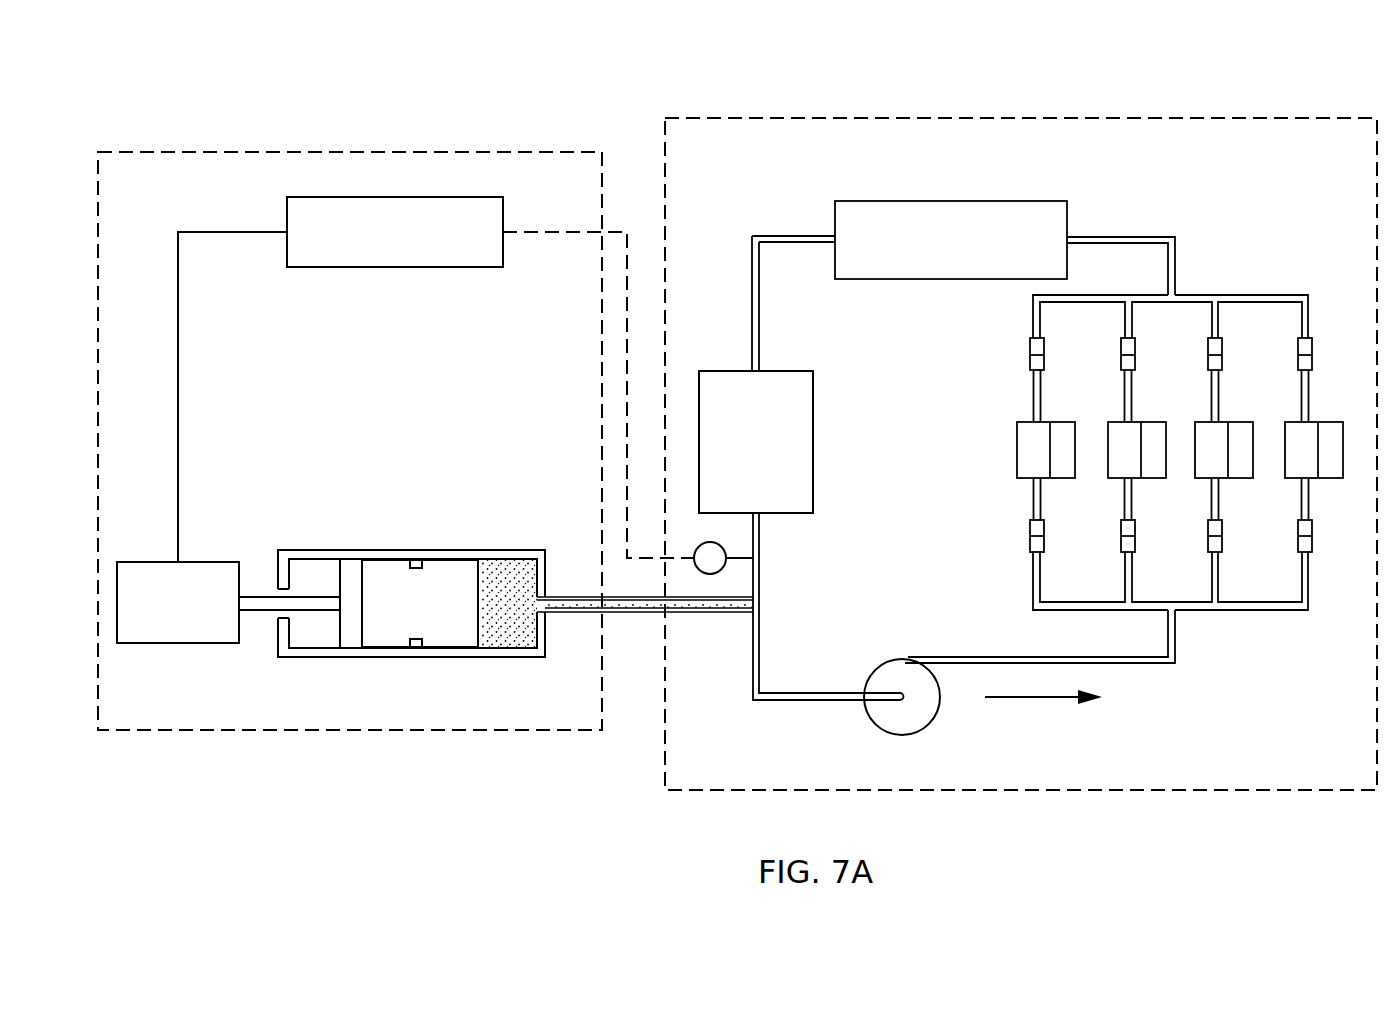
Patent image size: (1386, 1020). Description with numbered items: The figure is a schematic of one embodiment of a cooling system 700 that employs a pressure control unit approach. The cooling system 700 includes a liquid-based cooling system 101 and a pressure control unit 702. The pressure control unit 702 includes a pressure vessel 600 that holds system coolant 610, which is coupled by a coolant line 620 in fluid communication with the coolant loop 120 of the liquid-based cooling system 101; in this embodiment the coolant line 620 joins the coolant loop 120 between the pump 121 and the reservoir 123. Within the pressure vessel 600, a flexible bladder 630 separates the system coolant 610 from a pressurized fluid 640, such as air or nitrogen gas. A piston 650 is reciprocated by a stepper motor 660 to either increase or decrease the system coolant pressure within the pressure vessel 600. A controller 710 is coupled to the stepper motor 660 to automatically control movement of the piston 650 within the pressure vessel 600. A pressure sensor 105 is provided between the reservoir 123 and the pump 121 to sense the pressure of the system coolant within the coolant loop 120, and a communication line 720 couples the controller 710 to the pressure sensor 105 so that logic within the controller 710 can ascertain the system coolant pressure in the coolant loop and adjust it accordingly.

The cooling system 700 is at (792, 54).
The pressure control unit 702 is at (382, 152).
The controller 710 is at (352, 267).
The communication line 720 is at (553, 233).
The stepper motor 660 is at (200, 643).
The piston 650 is at (350, 567).
The pressurized fluid 640 is at (388, 630).
The flexible bladder 630 is at (447, 647).
The system coolant 610 is at (515, 638).
The coolant line 620 is at (578, 597).
The pressure vessel 600 is at (397, 543).
The liquid-based cooling system 101 is at (1192, 112).
The reservoir 123 is at (777, 456).
The pressure sensor 105 is at (718, 544).
The coolant loop 120 is at (760, 655).
The pump 121 is at (912, 727).